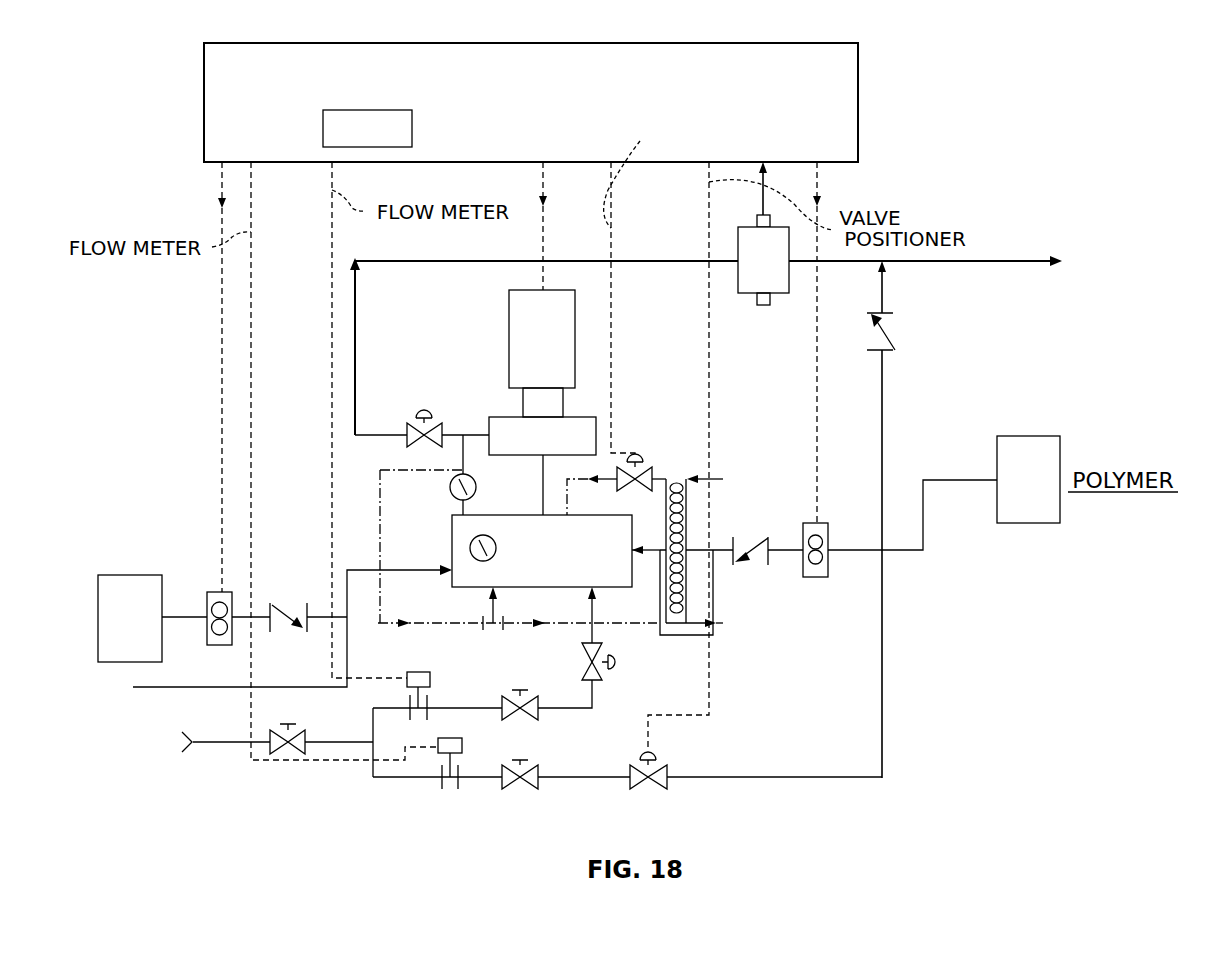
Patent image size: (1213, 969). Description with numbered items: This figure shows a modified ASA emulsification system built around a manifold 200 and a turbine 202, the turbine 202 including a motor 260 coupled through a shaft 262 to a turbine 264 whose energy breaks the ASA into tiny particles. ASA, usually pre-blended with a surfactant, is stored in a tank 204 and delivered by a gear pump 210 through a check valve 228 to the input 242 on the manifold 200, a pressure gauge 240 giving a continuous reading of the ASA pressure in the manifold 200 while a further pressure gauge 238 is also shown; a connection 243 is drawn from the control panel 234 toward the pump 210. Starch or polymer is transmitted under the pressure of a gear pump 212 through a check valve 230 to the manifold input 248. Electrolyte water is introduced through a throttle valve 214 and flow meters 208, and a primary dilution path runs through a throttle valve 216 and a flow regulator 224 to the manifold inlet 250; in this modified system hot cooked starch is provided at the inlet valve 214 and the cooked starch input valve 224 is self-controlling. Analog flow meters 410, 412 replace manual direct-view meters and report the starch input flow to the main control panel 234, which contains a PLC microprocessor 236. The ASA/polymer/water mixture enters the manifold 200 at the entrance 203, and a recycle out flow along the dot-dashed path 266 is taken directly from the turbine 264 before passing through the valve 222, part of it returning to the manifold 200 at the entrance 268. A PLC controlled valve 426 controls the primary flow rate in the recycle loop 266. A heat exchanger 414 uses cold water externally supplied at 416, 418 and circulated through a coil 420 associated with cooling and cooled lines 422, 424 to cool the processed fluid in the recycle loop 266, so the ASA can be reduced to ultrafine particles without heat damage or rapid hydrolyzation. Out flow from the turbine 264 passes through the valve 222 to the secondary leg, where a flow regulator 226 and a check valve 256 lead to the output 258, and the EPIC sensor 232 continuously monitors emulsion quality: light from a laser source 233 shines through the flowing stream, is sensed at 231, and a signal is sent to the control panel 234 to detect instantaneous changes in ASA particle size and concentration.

The manifold 200 is at (523, 544).
The turbine 202 is at (559, 372).
The entrance 203 is at (543, 492).
The source of ASA 204 is at (130, 575).
The flow meters 208 is at (510, 796).
The gear pump 210 is at (232, 633).
The gear pump 212 is at (815, 577).
The throttle valve 214 is at (288, 755).
The throttle valve 216 is at (520, 690).
The pressure controller 222 is at (422, 412).
The flow controller 224 is at (616, 662).
The flow controller 226 is at (655, 755).
The check valve 228 is at (285, 612).
The check valve 230 is at (765, 565).
The light sensor 231 is at (757, 219).
The EPIC sensor and monitor system 232 is at (738, 244).
The source of laser light 233 is at (764, 305).
The control panel 234 is at (858, 100).
The programmable logic controller micro-processor 236 is at (366, 110).
The pressure gauge 238 is at (450, 488).
The pressure gauge 240 is at (497, 556).
The input 242 is at (418, 572).
The VSD control line 243 is at (222, 170).
The manifold input 248 is at (843, 549).
The manifold inlet 250 is at (594, 615).
The check valve 256 is at (895, 348).
The output 258 is at (985, 261).
The motor 260 is at (563, 350).
The shaft 262 is at (523, 402).
The turbine 264 is at (577, 417).
The recycle path 266 is at (402, 468).
The entrance 268 is at (500, 610).
The analog flow meter 410 is at (418, 672).
The analog flow meter 412 is at (462, 746).
The heat exchanger 414 is at (709, 540).
The cold water supply 416 is at (720, 479).
The cold water supply 418 is at (713, 630).
The coil 420 is at (688, 514).
The cooling line 422 is at (666, 514).
The cooled line 424 is at (698, 542).
The PLC controlled valve 426 is at (640, 458).